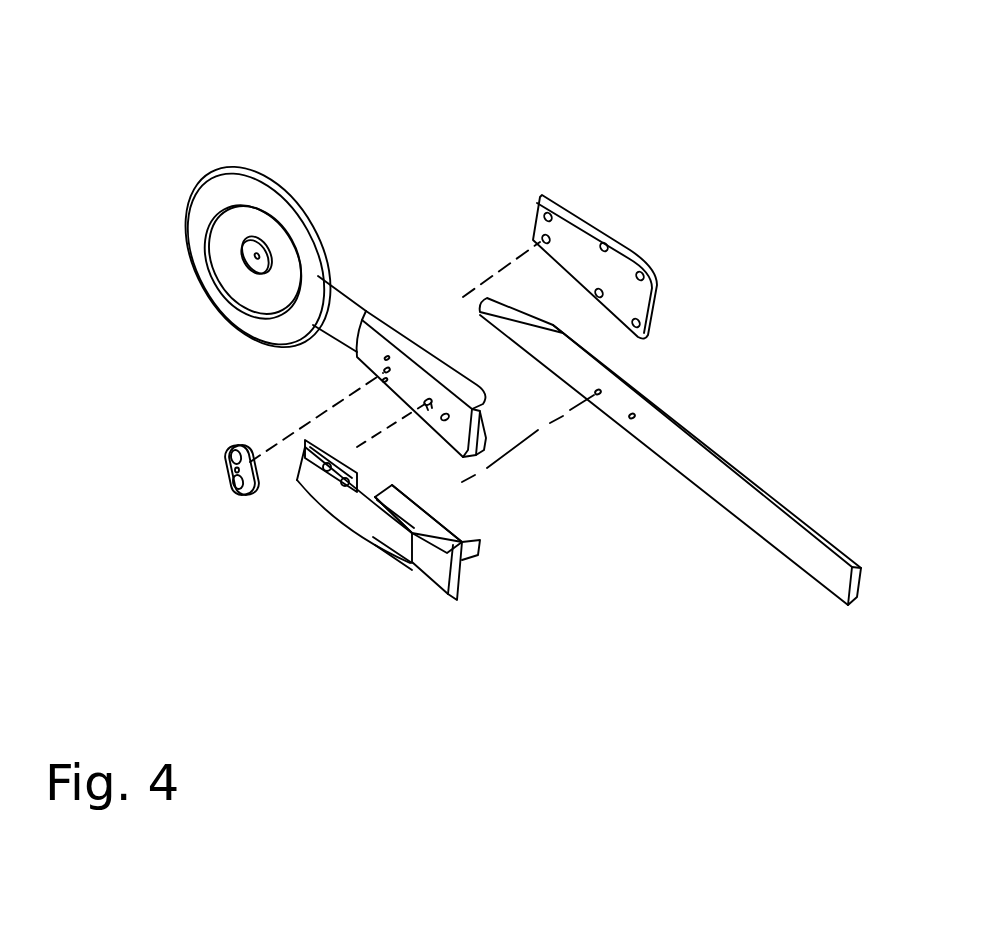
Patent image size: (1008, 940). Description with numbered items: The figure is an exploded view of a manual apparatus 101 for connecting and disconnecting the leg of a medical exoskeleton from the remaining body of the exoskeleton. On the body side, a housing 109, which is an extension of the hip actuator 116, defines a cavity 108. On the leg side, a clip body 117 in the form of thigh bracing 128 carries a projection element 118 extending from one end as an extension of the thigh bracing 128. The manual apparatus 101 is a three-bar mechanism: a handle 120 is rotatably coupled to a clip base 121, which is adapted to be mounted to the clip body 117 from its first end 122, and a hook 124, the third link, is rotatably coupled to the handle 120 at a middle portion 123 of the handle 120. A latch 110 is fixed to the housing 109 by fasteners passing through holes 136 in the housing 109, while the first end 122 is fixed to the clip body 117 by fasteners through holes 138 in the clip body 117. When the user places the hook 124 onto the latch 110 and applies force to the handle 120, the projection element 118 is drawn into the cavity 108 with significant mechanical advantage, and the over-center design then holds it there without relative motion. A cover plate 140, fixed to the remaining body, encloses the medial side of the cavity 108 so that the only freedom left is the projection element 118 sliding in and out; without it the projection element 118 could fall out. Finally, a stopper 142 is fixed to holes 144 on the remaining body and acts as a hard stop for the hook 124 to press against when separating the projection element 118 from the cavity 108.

The manual apparatus 101 is at (499, 153).
The cavity 108 is at (478, 428).
The housing 109 is at (460, 380).
The latch 110 is at (318, 442).
The hip actuator 116 is at (202, 277).
The clip body 117 is at (668, 447).
The projection element 118 is at (511, 307).
The handle 120 is at (435, 587).
The clip base 121 is at (398, 558).
The first end 122 is at (447, 530).
The middle portion 123 is at (415, 520).
The hook 124 is at (325, 503).
The thigh bracing 128 is at (737, 517).
The holes 136 is at (443, 420).
The holes 138 is at (630, 419).
The cover plate 140 is at (630, 250).
The stopper 142 is at (227, 463).
The holes 144 is at (384, 371).